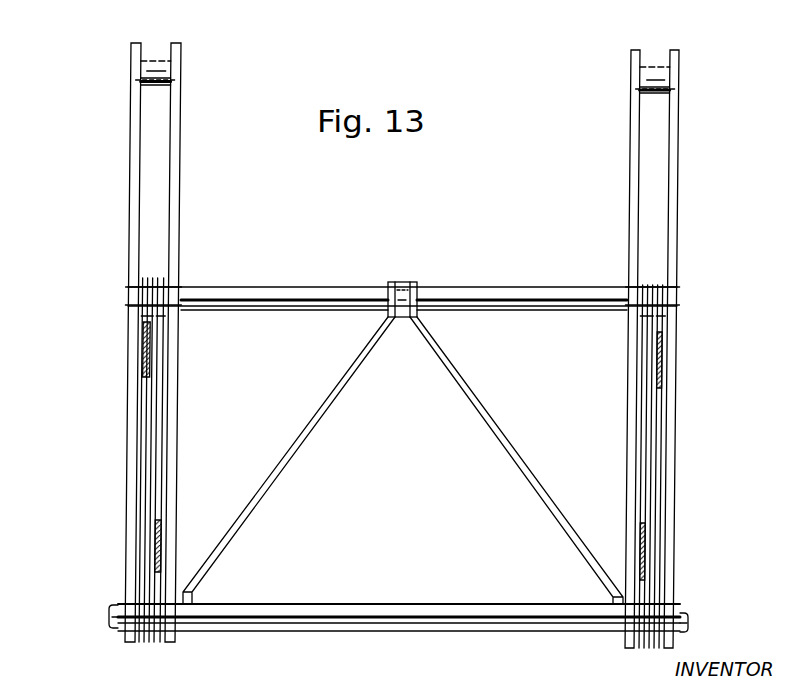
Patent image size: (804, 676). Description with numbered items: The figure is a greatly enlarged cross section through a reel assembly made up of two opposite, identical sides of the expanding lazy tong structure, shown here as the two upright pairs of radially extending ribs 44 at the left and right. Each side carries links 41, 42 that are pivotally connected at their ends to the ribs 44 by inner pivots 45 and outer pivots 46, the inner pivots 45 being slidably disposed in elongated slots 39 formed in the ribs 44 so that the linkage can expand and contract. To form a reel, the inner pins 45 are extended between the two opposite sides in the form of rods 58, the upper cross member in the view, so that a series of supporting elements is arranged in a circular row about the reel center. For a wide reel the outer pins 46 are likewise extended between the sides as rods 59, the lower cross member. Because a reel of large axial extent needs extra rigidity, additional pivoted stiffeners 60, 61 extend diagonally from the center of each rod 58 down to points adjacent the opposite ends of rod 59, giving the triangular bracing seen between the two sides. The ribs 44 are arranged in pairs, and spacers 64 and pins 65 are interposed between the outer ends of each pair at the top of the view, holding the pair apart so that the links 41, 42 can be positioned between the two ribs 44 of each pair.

The elongated slots 39 is at (129, 541).
The link 41 is at (160, 526).
The link 42 is at (146, 366).
The radially extending ribs 44 is at (131, 190).
The inner pivots 45 is at (110, 620).
The outer pivots 46 is at (132, 305).
The rods 58 is at (272, 288).
The rods 59 is at (347, 606).
The pivoted stiffener 60 is at (309, 431).
The pivoted stiffener 61 is at (481, 406).
The spacers 64 is at (157, 60).
The pins 65 is at (142, 80).